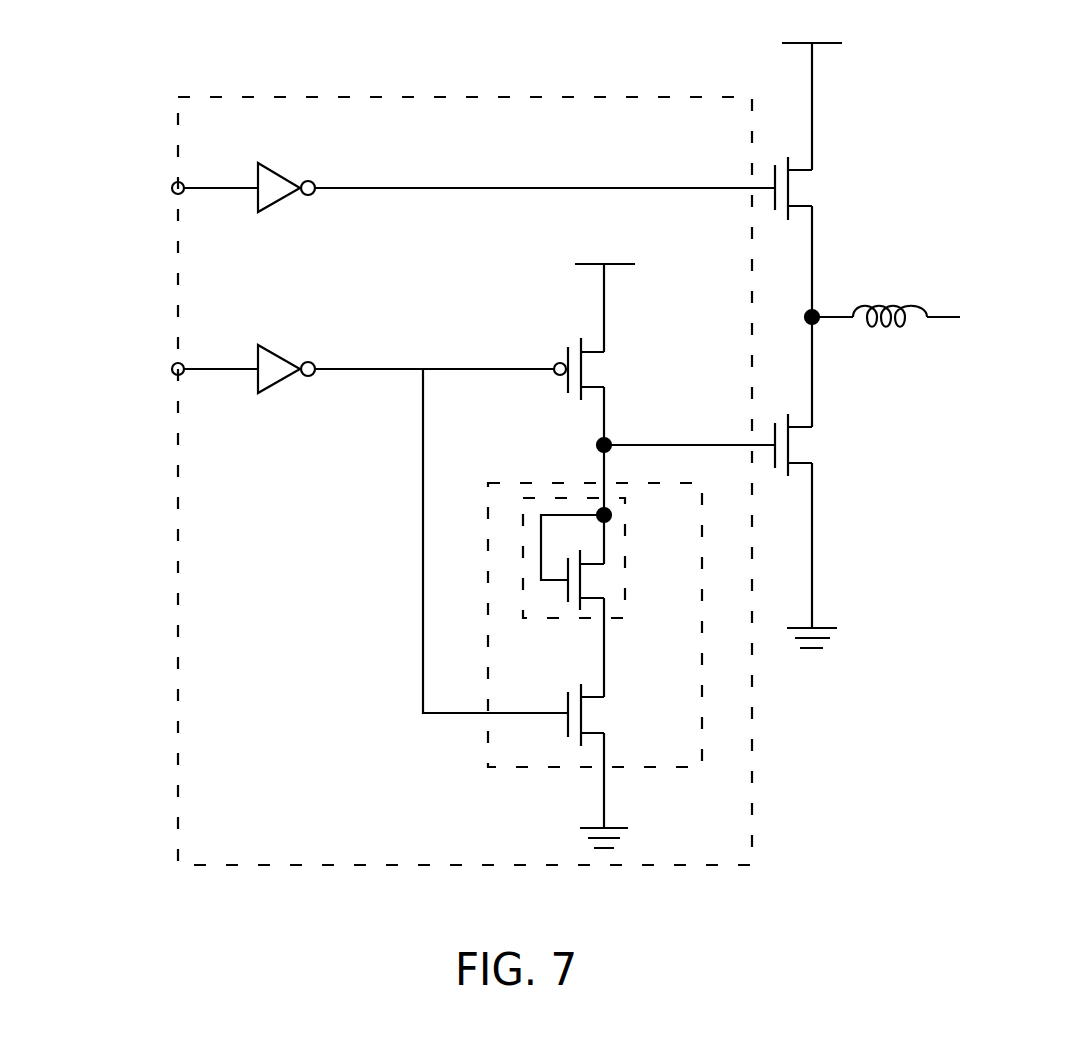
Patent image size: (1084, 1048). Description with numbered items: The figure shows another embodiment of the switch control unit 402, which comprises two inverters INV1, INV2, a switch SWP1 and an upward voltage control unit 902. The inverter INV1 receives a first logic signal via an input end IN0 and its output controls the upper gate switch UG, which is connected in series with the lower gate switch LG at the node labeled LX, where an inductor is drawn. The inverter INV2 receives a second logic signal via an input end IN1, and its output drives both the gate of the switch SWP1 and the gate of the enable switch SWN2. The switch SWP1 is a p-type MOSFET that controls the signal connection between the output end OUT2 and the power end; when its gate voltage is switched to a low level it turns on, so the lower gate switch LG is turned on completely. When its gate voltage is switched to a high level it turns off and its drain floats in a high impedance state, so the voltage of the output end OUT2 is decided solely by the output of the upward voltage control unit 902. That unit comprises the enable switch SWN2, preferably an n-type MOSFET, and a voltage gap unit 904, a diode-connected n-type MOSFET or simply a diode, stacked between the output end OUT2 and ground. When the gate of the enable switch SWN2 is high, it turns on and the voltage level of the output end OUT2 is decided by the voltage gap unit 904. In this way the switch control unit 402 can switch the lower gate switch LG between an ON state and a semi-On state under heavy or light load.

The switch control unit 402 is at (465, 96).
The upward voltage control unit 902 is at (517, 768).
The voltage gap unit 904 is at (625, 585).
The input end IN0 is at (172, 183).
The input end IN1 is at (172, 364).
The inverter INV1 is at (275, 171).
The inverter INV2 is at (275, 352).
The switch SWP1 is at (615, 332).
The enable switch SWN2 is at (626, 715).
The output end OUT2 is at (686, 433).
The upper gate switch UG is at (816, 131).
The lower gate switch LG is at (815, 445).
The inductor node LX is at (882, 297).